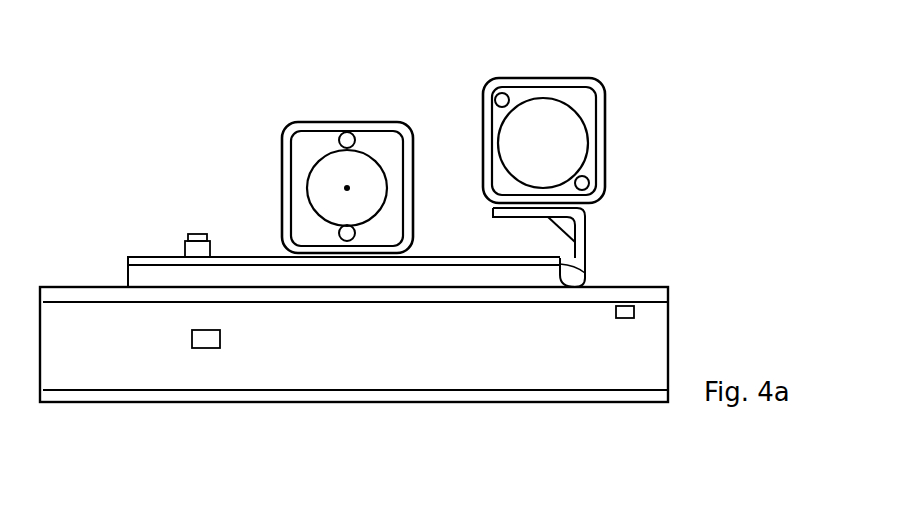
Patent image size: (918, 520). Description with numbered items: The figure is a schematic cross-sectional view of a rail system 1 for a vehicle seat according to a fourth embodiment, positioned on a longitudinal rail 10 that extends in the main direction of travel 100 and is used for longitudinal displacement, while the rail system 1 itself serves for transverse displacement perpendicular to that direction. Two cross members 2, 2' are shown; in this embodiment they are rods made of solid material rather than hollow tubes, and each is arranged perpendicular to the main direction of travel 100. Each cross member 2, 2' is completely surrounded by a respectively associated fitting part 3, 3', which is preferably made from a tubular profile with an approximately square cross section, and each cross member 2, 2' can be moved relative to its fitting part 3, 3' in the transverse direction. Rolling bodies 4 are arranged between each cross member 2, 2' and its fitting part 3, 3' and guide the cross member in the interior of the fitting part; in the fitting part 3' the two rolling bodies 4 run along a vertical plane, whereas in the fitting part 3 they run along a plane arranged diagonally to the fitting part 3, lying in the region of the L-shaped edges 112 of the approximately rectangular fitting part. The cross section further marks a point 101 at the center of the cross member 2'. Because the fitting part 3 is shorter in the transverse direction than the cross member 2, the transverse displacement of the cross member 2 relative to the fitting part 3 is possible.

The main direction of travel 100 is at (145, 115).
The rail system 1 is at (702, 77).
The cross member 2 is at (584, 143).
The fitting part 3 is at (577, 140).
The rolling bodies 4 is at (347, 133).
The cross member 2' is at (297, 188).
The fitting part 3' is at (347, 152).
The optical axis / center point 101 is at (352, 187).
The L-shaped edges 112 is at (404, 124).
The longitudinal rails 10 is at (647, 338).